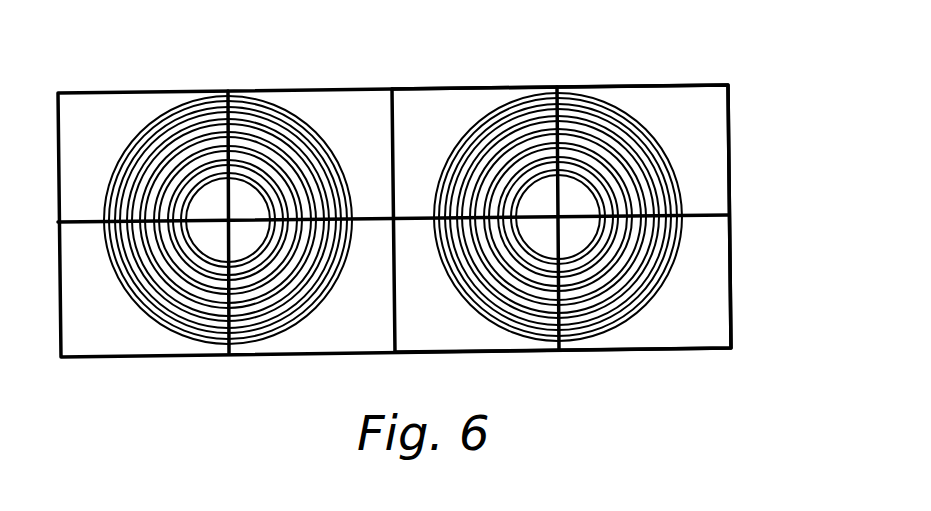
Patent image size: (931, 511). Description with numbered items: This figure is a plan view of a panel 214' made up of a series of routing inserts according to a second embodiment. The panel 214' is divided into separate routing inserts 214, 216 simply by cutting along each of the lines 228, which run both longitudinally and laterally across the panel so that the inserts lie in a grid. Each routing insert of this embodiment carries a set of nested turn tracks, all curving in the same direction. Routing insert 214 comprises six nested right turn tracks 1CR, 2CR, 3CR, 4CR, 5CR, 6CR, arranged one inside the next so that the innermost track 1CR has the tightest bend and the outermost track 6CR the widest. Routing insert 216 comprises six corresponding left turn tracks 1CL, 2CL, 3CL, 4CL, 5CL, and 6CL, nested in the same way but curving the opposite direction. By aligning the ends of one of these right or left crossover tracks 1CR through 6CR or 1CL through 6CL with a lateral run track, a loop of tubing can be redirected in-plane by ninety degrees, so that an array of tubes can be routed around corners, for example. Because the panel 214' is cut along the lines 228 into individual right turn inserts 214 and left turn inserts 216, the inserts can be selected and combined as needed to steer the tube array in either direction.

The routing insert 214 is at (374, 191).
The panel 214' is at (610, 215).
The routing insert 216 is at (372, 175).
The lines 228 is at (227, 80).
The right turn track 1CR is at (163, 115).
The right turn track 2CR is at (150, 130).
The right turn track 3CR is at (145, 150).
The right turn track 4CR is at (140, 175).
The right turn track 5CR is at (140, 200).
The right turn track 6CR is at (182, 213).
The left turn track 1CL is at (265, 110).
The left turn track 2CL is at (274, 115).
The left turn track 3CL is at (295, 132).
The left turn track 4CL is at (305, 150).
The left turn track 5CL is at (312, 170).
The left turn track 6CL is at (316, 195).